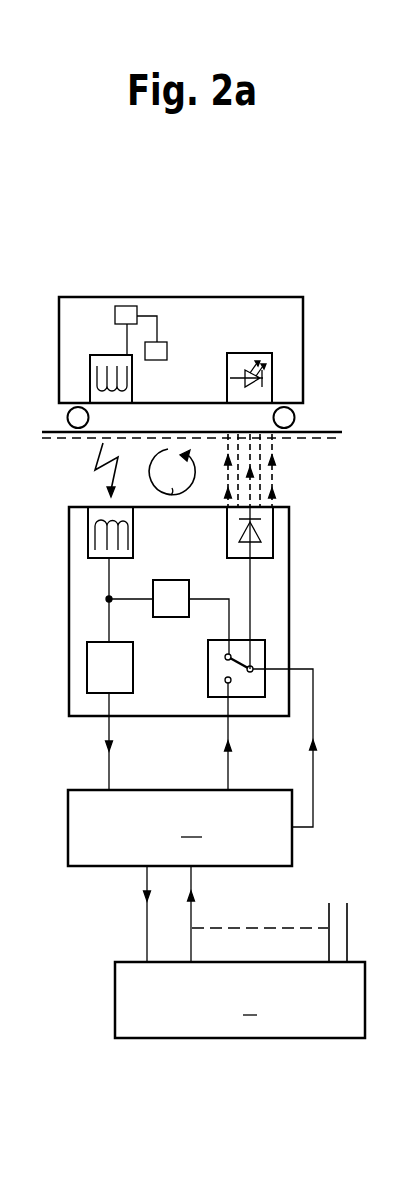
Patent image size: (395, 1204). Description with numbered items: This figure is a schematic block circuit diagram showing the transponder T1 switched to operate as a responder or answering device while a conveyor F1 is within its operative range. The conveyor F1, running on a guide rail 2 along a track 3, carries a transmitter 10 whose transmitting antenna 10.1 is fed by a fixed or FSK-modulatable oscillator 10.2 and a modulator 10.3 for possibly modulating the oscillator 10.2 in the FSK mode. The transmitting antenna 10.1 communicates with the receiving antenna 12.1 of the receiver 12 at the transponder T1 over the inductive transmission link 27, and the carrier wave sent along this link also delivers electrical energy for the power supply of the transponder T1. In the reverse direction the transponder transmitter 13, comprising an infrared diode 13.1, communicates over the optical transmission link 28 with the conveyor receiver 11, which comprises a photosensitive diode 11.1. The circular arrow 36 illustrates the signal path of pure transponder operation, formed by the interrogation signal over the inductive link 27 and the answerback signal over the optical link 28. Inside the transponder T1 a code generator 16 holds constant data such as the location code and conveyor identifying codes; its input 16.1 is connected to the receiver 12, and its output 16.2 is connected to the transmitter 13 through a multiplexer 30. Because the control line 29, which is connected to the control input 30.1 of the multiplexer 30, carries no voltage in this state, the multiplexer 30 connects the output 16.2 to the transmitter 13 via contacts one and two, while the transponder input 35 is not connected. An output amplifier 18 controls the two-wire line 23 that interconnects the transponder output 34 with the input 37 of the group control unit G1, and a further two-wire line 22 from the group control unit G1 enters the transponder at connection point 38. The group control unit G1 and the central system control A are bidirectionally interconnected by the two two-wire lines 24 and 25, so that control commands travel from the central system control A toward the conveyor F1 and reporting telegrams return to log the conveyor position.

The conveyor F1 is at (178, 333).
The transmitter 10 is at (110, 358).
The transmitting antenna 10.1 is at (94, 380).
The oscillator 10.2 is at (128, 306).
The modulator 10.3 is at (167, 351).
The receiver 11 is at (242, 358).
The photosensitive diode 11.1 is at (264, 377).
The guide rail 2 is at (323, 431).
The track path 3 is at (332, 439).
The inductive transmission path or link 27 is at (95, 464).
The circular arrow 36 is at (172, 472).
The optical transmission path or link 28 is at (258, 478).
The transponder T1 is at (82, 600).
The receiver 12 is at (103, 559).
The receiving antenna 12.1 is at (97, 531).
The transmitter 13 is at (267, 552).
The infrared diode 13.1 is at (262, 530).
The code generator 16 is at (176, 590).
The input of the code generator 16.1 is at (153, 610).
The output of the code generator 16.2 is at (190, 597).
The output amplifier 18 is at (97, 660).
The multiplexer 30 is at (258, 650).
The control input 30.1 is at (265, 677).
The control line 29 is at (315, 703).
The output of the transponder 34 is at (108, 717).
The two-wire line or conductor 23 is at (113, 752).
The input of the transponder 35 is at (230, 717).
The two-wire line or conductor 22 is at (227, 753).
The input of the group control unit 37 is at (108, 790).
The connection point 38 is at (230, 789).
The group control unit G1 is at (180, 828).
The two-wire line or conductor 24 is at (147, 912).
The two-wire line or conductor 25 is at (192, 912).
The central system control A is at (240, 1000).